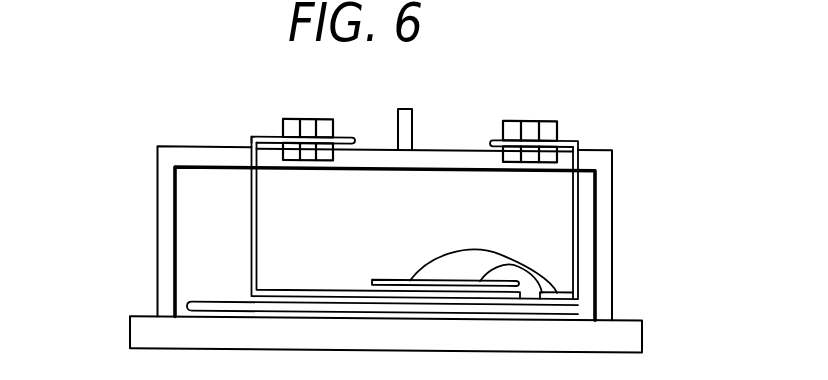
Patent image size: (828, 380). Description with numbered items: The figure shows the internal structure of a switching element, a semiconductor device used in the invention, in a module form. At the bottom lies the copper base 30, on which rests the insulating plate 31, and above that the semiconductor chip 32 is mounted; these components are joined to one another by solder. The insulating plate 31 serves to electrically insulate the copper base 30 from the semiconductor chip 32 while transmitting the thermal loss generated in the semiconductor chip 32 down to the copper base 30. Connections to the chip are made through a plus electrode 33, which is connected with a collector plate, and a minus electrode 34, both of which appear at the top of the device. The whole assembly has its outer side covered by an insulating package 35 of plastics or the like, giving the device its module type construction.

The copper base 30 is at (129, 326).
The insulating plate 31 is at (188, 300).
The semiconductor chip 32 is at (385, 276).
The plus electrode 33 is at (268, 134).
The minus electrode 34 is at (498, 136).
The insulating package 35 is at (614, 190).